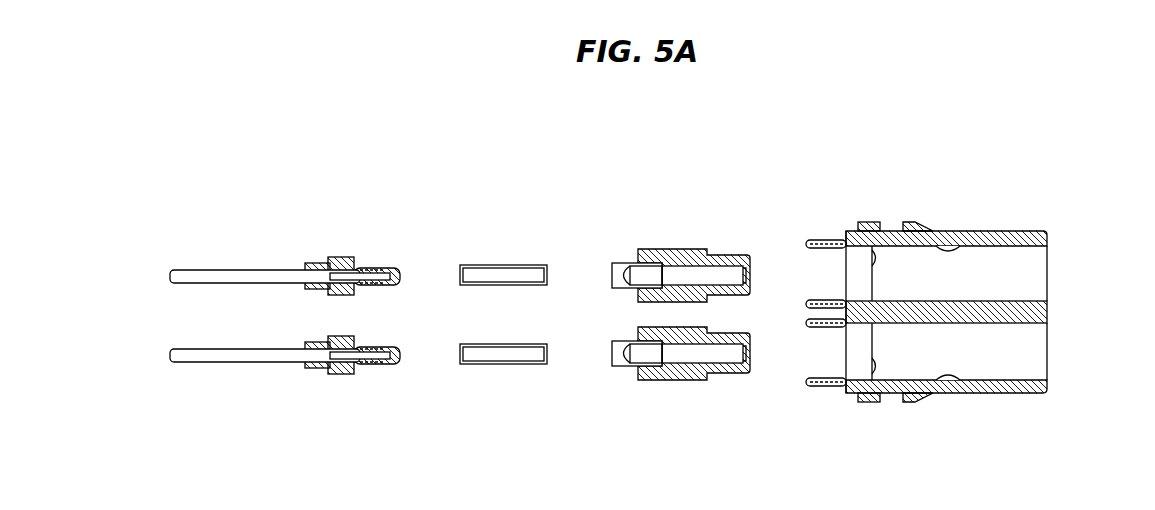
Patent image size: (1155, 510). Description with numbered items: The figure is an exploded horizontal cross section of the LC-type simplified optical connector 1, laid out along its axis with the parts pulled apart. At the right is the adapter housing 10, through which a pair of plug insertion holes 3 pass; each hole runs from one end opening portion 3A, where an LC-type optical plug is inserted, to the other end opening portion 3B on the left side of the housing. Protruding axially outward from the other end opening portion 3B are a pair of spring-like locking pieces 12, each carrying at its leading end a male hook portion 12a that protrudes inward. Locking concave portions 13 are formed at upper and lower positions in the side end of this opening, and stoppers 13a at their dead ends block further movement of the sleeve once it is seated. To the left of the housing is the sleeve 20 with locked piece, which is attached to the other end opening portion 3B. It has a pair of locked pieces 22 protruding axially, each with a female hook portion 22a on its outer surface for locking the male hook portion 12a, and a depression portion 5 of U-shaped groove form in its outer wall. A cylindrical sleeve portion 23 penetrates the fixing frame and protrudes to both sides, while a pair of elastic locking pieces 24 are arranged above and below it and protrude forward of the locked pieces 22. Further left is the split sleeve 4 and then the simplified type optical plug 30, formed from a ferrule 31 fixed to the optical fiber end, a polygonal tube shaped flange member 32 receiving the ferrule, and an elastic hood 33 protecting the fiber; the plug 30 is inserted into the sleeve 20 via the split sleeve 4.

The LC-type simplified optical connector 1 is at (497, 201).
The simplified type optical plug 30 is at (323, 243).
The ferrule 31 is at (378, 269).
The flange member 32 is at (338, 257).
The hood 33 is at (309, 264).
The split sleeve 4 is at (508, 264).
The sleeve with locked piece 20 is at (597, 255).
The locked piece 22 is at (688, 250).
The female hook portion 22a is at (648, 250).
The cylindrical sleeve portion 23 is at (735, 256).
The elastic locking piece 24 is at (613, 263).
The depression portion 5 is at (637, 262).
The adapter housing 10 is at (1008, 231).
The plug insertion hole 3 is at (962, 231).
The one end opening portion 3A is at (1048, 273).
The other end opening portion 3B is at (838, 266).
The locking concave portion 13 is at (858, 268).
The stopper 13a is at (882, 230).
The locking piece 12 is at (834, 244).
The male hook portion 12a is at (820, 252).